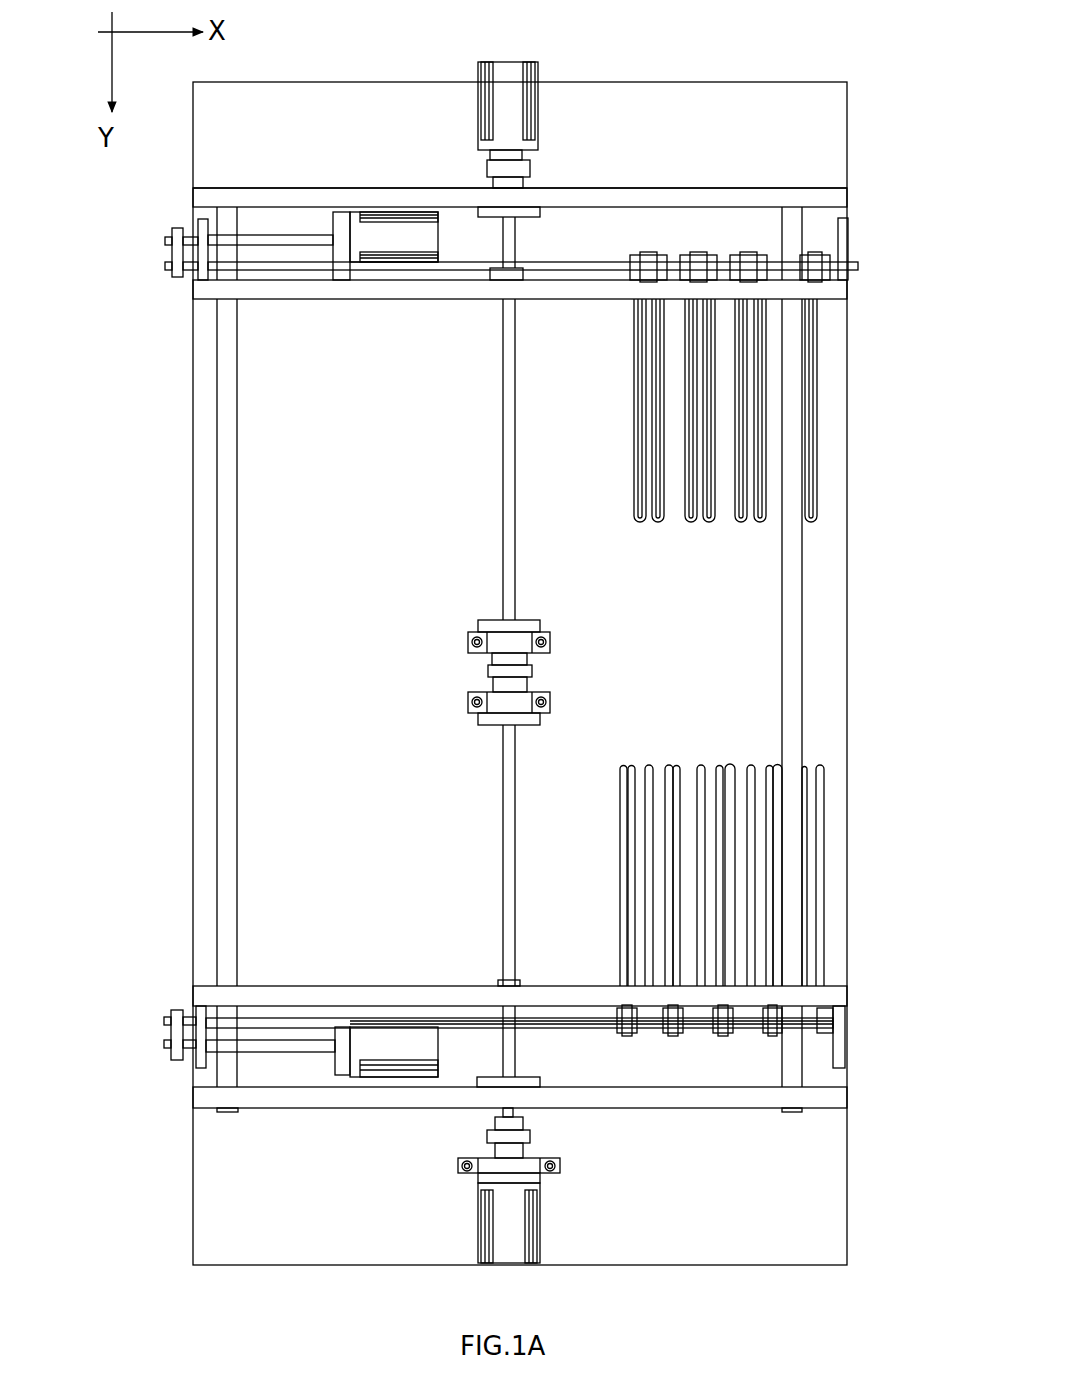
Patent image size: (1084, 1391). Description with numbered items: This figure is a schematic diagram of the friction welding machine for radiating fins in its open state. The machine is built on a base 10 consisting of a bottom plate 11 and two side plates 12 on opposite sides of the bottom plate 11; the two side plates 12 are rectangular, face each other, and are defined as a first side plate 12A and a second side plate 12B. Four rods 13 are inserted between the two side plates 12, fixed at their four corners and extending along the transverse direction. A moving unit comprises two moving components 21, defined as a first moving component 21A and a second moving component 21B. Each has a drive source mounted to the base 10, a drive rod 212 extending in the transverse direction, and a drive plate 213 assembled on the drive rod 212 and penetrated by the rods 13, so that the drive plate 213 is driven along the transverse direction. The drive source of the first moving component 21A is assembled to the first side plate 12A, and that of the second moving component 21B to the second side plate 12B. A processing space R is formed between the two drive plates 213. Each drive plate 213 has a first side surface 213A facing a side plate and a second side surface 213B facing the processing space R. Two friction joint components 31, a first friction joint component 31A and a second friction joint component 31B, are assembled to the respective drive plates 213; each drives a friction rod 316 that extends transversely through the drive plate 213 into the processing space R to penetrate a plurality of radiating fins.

The base 10 is at (856, 69).
The bottom plate 11 is at (688, 97).
The side plates 12 is at (576, 626).
The first side plate 12A is at (825, 193).
The second side plate 12B is at (830, 1100).
The rods 13 is at (790, 650).
The moving components 21 is at (469, 665).
The first moving component 21A is at (442, 98).
The second moving component 21B is at (469, 1215).
The drive rod 212 is at (510, 432).
The drive plate 213 is at (561, 647).
The first side surface 213A is at (568, 280).
The second side surface 213B is at (475, 283).
The friction joint components 31 is at (486, 652).
The first friction joint component 31A is at (482, 252).
The second friction joint component 31B is at (491, 1053).
The friction rod 316 is at (636, 358).
The processing space R is at (270, 653).